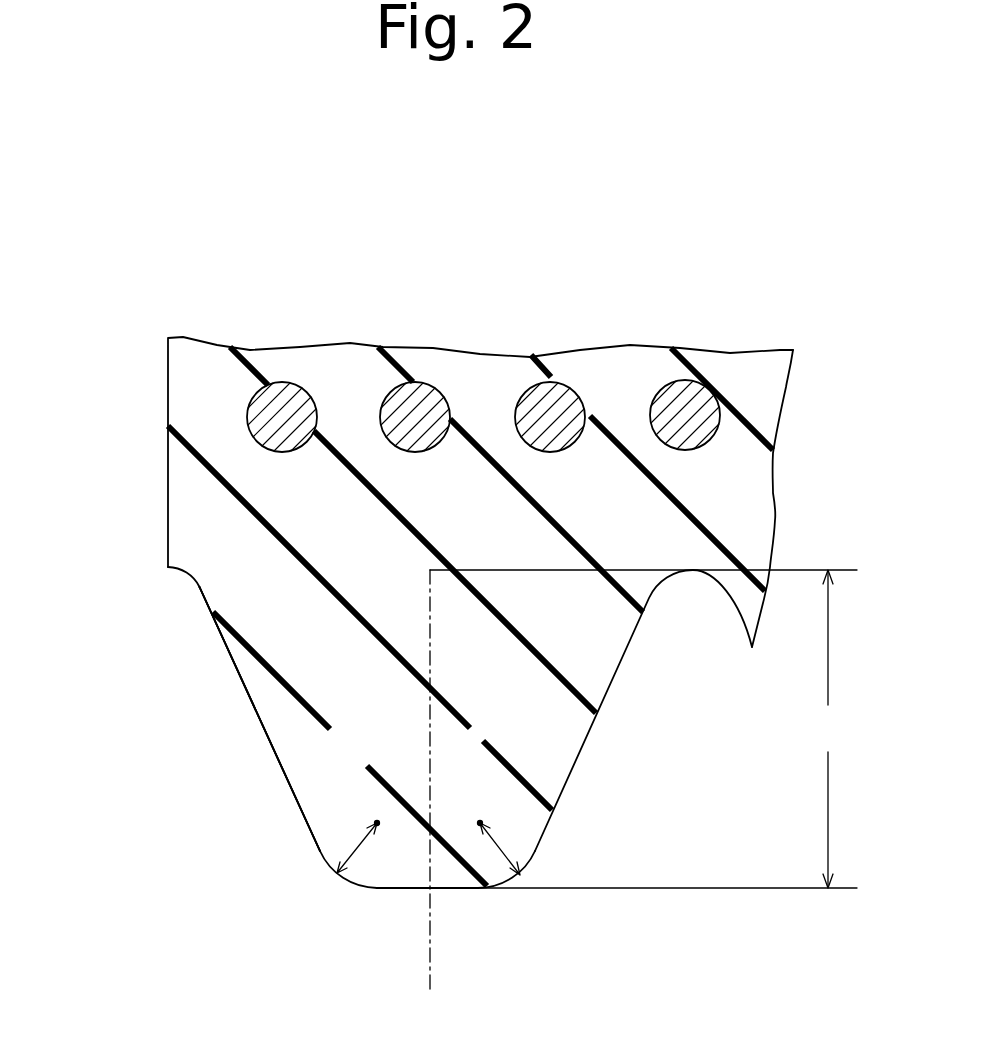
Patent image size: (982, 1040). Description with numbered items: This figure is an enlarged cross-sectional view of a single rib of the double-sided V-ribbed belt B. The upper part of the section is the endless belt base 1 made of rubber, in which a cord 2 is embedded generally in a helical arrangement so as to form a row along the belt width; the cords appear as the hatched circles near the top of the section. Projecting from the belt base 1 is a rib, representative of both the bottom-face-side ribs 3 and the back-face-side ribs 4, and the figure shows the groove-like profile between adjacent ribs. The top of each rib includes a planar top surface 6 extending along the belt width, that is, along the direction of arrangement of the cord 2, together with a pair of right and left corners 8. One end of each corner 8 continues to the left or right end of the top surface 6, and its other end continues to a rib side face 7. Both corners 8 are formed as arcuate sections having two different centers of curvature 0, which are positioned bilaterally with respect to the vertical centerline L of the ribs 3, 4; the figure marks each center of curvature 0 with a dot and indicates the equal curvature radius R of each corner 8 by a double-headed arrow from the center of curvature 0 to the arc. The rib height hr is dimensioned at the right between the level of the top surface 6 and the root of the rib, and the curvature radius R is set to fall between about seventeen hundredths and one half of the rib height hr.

The V-ribbed belt B is at (125, 230).
The belt base 1 is at (160, 567).
The cord 2 is at (707, 410).
The bottom-face-side rib 3 is at (213, 719).
The back-face-side rib 4 is at (257, 717).
The top surface 6 is at (387, 888).
The rib side face 7 is at (223, 645).
The corner 8 is at (330, 878).
The center of curvature 0 is at (377, 823).
The curvature radius R is at (337, 870).
The vertical centerline L is at (430, 805).
The rib height hr is at (643, 729).